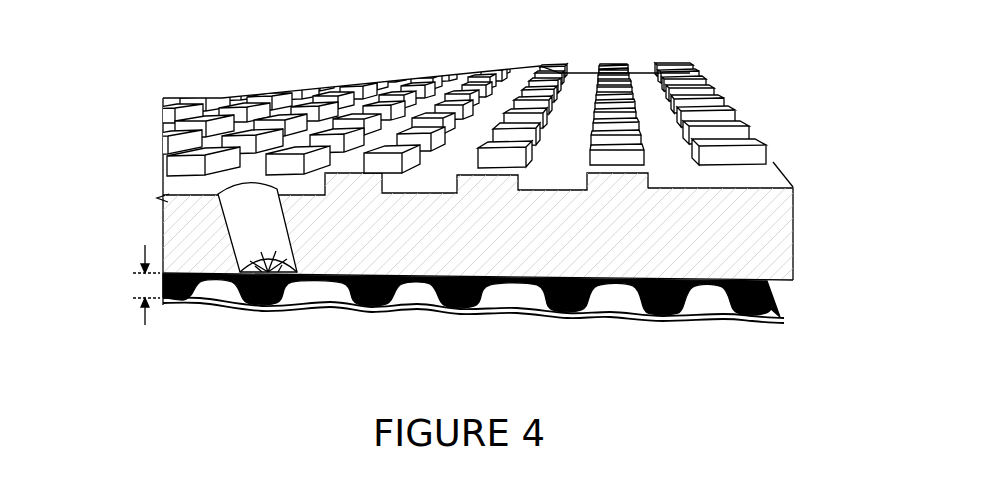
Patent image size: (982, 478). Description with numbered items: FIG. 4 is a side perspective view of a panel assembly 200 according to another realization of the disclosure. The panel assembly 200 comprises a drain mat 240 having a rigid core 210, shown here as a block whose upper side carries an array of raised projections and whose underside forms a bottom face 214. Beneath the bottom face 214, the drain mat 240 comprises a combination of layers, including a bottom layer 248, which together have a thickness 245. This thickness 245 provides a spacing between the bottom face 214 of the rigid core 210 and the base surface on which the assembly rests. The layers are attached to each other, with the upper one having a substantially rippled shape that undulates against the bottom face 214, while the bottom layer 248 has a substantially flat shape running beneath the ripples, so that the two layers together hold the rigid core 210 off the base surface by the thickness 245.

The panel assembly 200 is at (134, 39).
The rigid core 210 is at (180, 223).
The bottom face 214 is at (788, 282).
The drain mat 240 is at (285, 307).
The thickness 245 is at (143, 323).
The bottom layer 248 is at (602, 302).